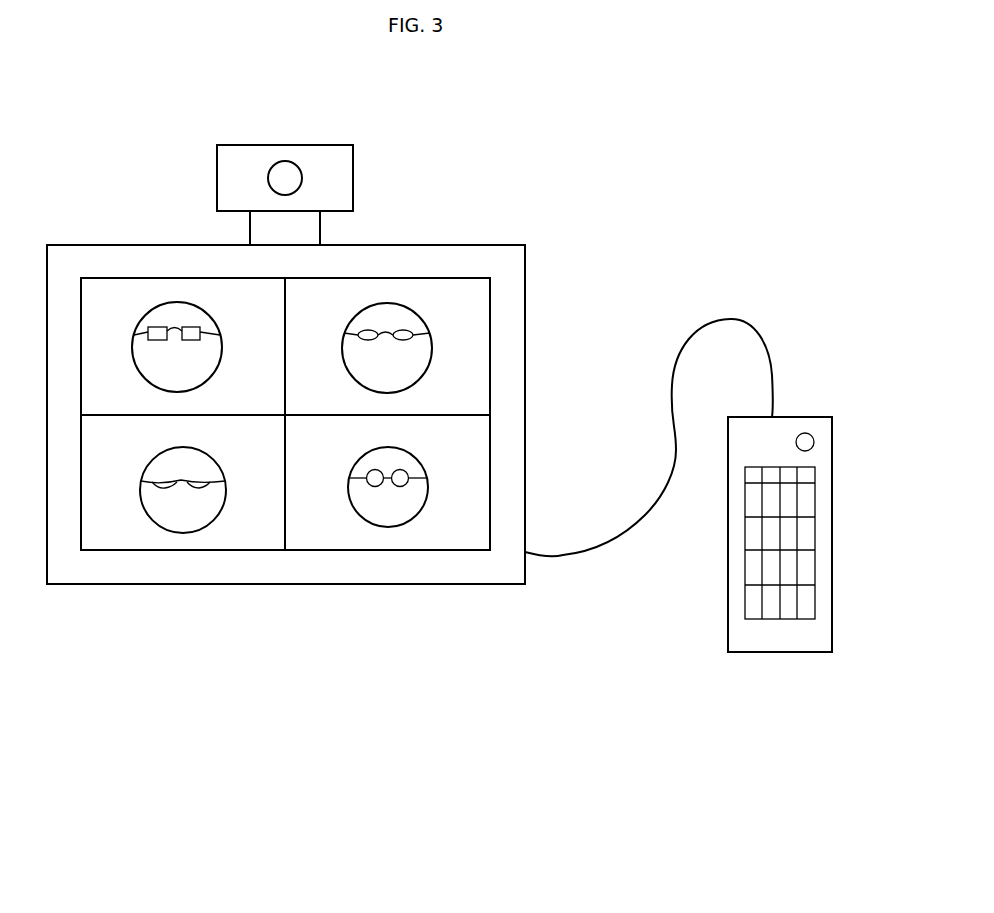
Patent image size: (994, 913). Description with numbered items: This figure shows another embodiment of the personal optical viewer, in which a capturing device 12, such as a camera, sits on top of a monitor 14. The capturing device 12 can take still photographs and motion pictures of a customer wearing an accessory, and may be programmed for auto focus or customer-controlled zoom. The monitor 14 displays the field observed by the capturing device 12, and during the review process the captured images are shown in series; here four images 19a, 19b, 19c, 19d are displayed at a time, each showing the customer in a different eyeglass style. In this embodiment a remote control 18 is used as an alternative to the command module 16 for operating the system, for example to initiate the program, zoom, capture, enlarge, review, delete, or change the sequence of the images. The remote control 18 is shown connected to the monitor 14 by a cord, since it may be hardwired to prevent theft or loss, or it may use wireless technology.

The capturing device 12 is at (320, 178).
The monitor 14 is at (394, 398).
The command module 16 is at (798, 500).
The remote control 18 is at (827, 611).
The image 19a is at (162, 339).
The image 19b is at (368, 339).
The image 19c is at (164, 477).
The image 19d is at (366, 473).